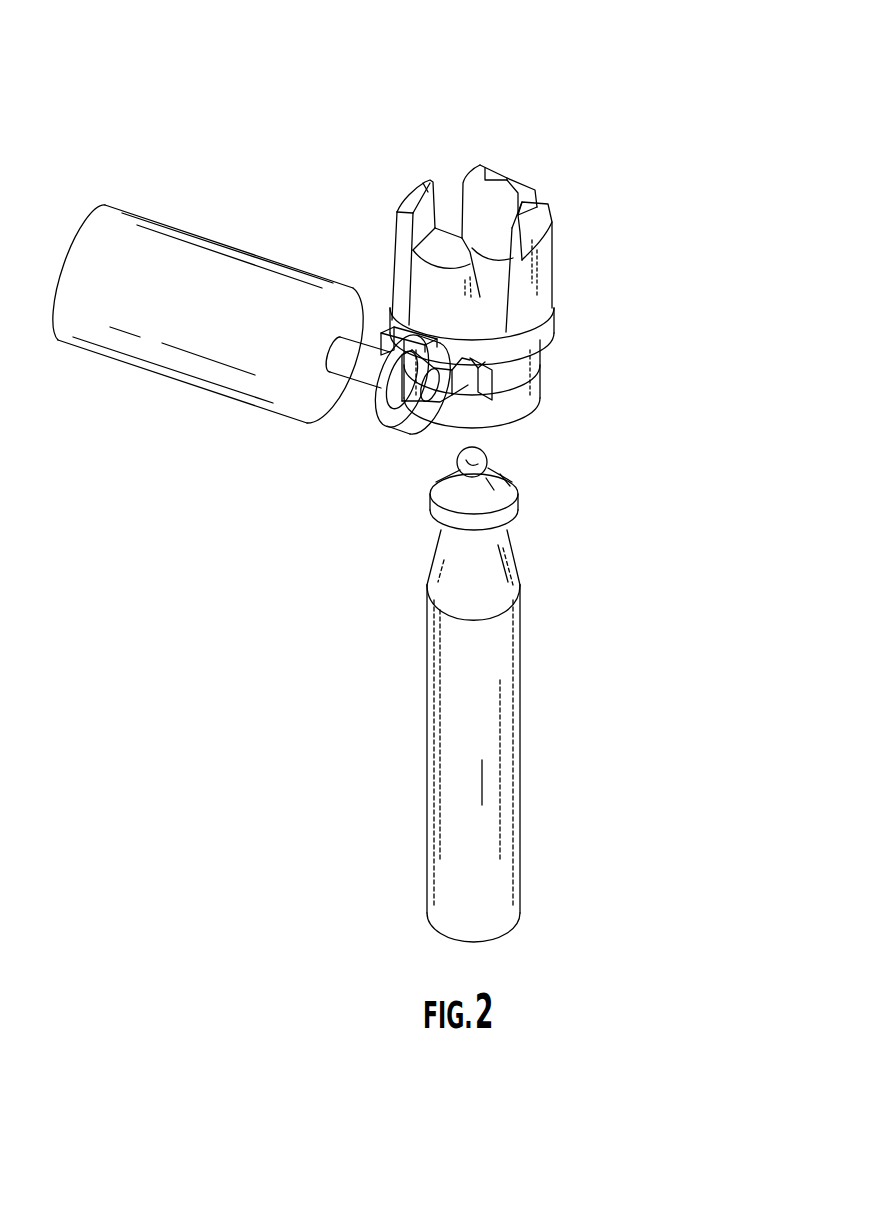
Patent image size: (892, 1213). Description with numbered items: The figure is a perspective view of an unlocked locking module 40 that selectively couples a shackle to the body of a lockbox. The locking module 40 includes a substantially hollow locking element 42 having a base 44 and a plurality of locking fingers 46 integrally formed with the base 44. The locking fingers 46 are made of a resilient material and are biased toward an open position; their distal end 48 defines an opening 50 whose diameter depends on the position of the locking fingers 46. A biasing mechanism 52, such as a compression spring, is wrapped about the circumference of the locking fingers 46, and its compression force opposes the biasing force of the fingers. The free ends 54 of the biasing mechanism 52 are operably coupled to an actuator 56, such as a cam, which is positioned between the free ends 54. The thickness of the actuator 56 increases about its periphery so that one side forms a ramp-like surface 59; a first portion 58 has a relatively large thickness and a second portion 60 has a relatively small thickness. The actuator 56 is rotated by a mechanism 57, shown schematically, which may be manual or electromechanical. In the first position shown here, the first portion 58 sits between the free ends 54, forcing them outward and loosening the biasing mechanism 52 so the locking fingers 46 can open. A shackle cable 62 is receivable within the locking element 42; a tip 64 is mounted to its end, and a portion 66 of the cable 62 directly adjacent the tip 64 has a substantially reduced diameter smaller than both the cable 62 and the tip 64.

The locking module 40 is at (670, 120).
The locking element 42 is at (545, 360).
The base 44 is at (518, 408).
The locking fingers 46 is at (500, 212).
The distal end 48 is at (433, 182).
The opening 50 is at (458, 190).
The biasing mechanism 52 is at (547, 327).
The free ends 54 is at (455, 352).
The actuator 56 is at (407, 443).
The mechanism 57 is at (275, 292).
The first portion 58 is at (380, 326).
The ramp-like surface 59 is at (452, 357).
The second portion 60 is at (396, 412).
The shackle cable 62 is at (503, 828).
The tip 64 is at (472, 462).
The portion 66 is at (497, 578).